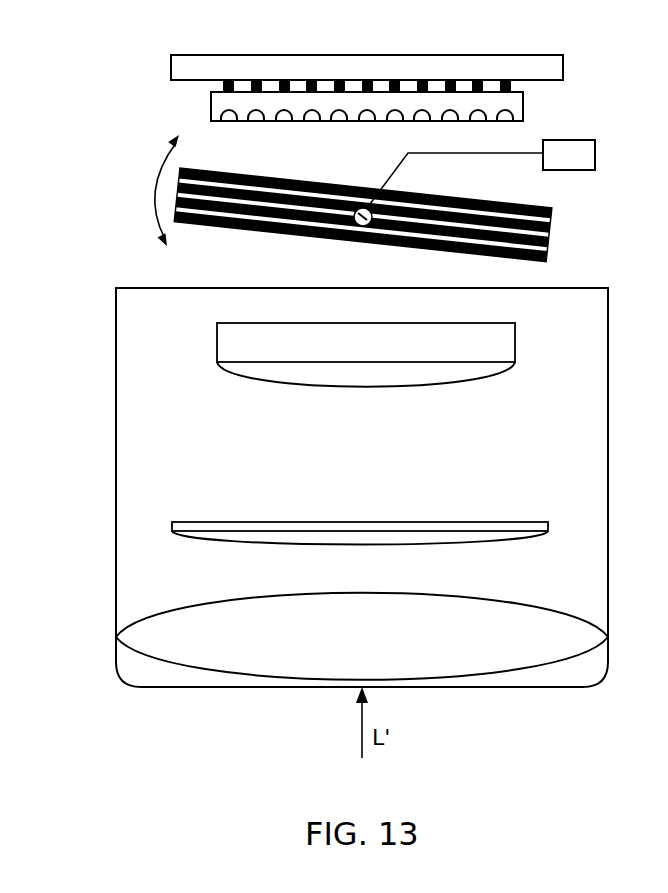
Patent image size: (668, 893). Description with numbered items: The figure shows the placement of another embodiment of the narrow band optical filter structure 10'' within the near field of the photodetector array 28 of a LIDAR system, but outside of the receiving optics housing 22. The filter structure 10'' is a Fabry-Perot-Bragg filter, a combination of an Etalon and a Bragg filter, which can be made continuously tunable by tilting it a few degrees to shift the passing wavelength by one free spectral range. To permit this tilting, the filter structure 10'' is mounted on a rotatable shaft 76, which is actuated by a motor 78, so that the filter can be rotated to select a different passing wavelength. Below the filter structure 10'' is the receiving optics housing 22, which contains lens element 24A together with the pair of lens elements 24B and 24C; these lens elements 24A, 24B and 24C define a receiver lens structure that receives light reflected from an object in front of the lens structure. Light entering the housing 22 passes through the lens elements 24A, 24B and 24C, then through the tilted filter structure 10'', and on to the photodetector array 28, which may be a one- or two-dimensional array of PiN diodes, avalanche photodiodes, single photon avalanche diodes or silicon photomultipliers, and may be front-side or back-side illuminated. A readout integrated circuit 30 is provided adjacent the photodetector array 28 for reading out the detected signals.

The readout integrated circuit 30 is at (171, 69).
The photodetector array 28 is at (524, 105).
The narrow band optical filter structure 10'' is at (392, 215).
The rotatable shaft 76 is at (343, 203).
The motor 78 is at (595, 156).
The receiving optics housing 22 is at (608, 460).
The lens element 24A is at (217, 345).
The lens element 24B is at (172, 527).
The lens element 24C is at (188, 604).